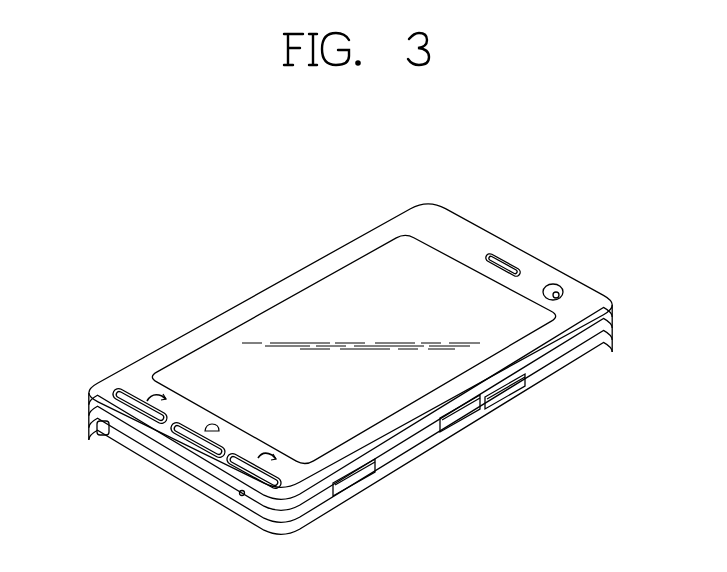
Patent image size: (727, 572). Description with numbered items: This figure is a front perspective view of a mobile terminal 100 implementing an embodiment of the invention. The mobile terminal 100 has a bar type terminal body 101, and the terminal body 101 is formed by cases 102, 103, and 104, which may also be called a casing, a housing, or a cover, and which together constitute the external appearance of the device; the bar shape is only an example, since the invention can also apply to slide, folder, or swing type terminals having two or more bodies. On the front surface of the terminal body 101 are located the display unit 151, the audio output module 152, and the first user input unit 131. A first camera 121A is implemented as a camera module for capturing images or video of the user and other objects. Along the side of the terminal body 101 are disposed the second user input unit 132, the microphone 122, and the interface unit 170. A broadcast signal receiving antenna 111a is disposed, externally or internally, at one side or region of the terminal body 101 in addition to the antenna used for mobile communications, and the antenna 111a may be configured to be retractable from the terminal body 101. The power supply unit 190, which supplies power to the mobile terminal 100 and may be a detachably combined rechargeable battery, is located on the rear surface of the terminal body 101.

The mobile terminal 100 is at (233, 255).
The terminal body 101 is at (480, 213).
The case 102 is at (600, 327).
The case 103 is at (580, 350).
The case 104 is at (553, 380).
The display unit 151 is at (375, 258).
The audio output module 152 is at (507, 262).
The first camera 121A is at (562, 292).
The first user input unit 131 is at (242, 468).
The second user input unit 132 is at (460, 422).
The microphone 122 is at (239, 496).
The broadcast signal receiving antenna 111a is at (97, 427).
The interface unit 170 is at (355, 478).
The power supply unit 190 is at (418, 458).